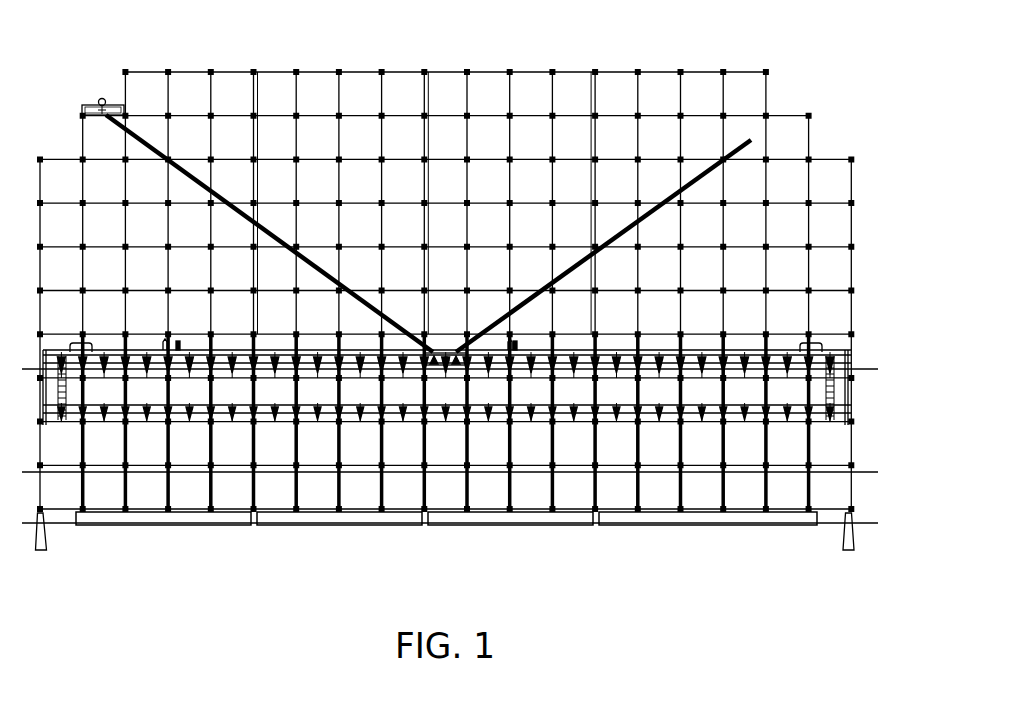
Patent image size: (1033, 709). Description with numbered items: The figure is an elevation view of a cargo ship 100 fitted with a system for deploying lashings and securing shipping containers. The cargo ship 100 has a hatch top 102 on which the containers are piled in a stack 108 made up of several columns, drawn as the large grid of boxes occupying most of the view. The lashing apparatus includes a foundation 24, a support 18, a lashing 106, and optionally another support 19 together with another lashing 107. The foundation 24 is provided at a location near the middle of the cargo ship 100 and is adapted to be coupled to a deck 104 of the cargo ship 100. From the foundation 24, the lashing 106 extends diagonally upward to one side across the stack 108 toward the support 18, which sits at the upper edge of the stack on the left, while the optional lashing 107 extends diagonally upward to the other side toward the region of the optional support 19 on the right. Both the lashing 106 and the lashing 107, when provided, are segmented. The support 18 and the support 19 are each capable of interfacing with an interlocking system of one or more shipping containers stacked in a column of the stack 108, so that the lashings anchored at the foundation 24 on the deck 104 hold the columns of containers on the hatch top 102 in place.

The cargo ship 100 is at (482, 285).
The hatch top 102 is at (866, 523).
The deck 104 is at (870, 369).
The lashing 106 is at (292, 249).
The another lashing 107 is at (672, 196).
The stack 108 is at (406, 92).
The support 18 is at (100, 102).
The another support 19 is at (780, 101).
The foundation 24 is at (445, 345).